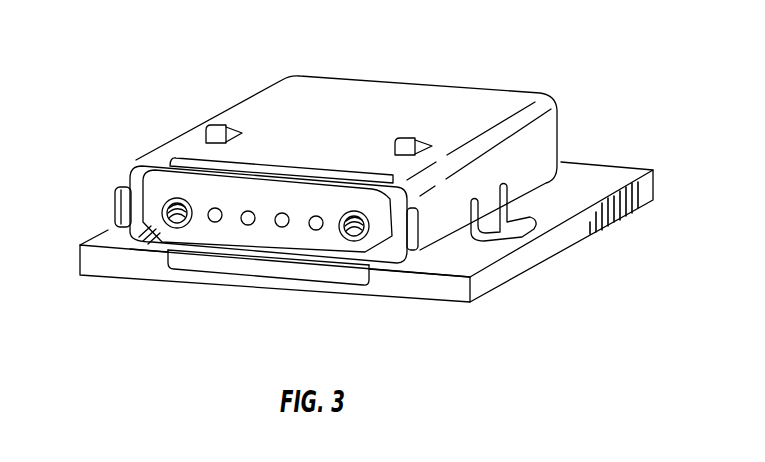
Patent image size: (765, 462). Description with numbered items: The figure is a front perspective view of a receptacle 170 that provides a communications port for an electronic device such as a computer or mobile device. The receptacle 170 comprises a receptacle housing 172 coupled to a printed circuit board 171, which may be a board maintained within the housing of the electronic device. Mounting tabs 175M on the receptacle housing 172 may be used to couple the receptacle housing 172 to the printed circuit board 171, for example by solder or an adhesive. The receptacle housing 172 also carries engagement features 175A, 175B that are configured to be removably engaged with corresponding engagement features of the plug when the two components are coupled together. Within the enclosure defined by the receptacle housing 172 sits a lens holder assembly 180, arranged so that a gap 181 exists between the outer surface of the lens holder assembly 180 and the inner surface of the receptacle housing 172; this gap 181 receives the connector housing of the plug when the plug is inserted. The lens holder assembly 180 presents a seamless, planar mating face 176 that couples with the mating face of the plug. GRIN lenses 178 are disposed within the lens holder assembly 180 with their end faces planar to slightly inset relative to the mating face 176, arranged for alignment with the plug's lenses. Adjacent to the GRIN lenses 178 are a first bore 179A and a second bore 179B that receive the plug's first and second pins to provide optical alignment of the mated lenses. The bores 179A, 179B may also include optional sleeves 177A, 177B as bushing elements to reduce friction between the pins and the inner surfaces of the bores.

The receptacle 170 is at (176, 86).
The printed circuit board 171 is at (92, 242).
The receptacle housing 172 is at (508, 101).
The engagement feature 175A is at (408, 137).
The engagement feature 175B is at (220, 124).
The mounting tab 175M is at (524, 226).
The mating face 176 is at (272, 230).
The sleeve 177A is at (341, 235).
The sleeve 177B is at (194, 226).
The GRIN lenses 178 is at (316, 216).
The first bore 179A is at (358, 240).
The second bore 179B is at (170, 227).
The lens holder assembly 180 is at (325, 197).
The gap 181 is at (390, 255).